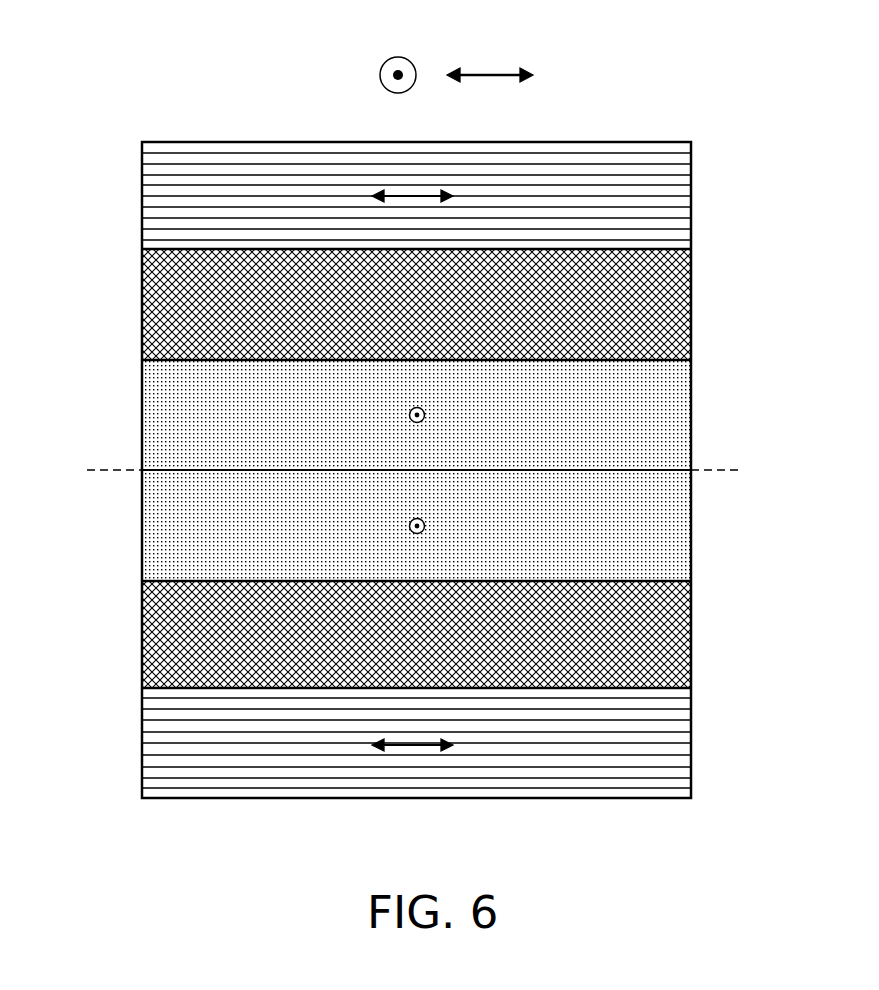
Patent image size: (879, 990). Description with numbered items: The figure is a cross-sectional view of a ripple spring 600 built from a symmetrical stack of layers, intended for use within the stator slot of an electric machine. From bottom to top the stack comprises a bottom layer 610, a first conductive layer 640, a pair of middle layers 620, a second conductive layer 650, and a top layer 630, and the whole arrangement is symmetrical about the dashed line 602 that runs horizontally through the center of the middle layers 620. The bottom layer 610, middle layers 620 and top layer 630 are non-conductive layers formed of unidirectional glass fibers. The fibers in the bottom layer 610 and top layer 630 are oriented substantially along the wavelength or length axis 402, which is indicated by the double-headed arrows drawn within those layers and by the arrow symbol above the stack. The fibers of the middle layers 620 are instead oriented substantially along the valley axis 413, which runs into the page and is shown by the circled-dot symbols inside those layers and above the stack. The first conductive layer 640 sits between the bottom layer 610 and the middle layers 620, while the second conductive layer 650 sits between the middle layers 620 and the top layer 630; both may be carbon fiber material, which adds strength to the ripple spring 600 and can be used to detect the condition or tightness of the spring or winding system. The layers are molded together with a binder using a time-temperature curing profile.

The ripple spring 600 is at (665, 68).
The top layer 630 is at (691, 200).
The second conductive layer 650 is at (142, 303).
The middle layers 620 is at (691, 415).
The dashed line 602 is at (97, 470).
The first conductive layer 640 is at (142, 632).
The bottom layer 610 is at (691, 748).
The valley axis 413 is at (380, 77).
The length axis 402 is at (495, 75).